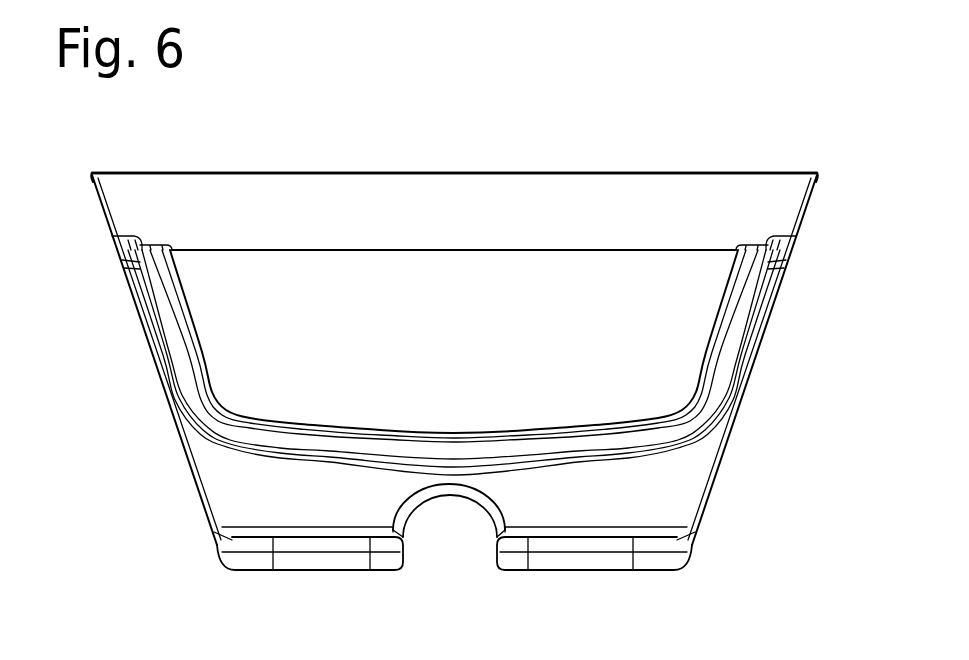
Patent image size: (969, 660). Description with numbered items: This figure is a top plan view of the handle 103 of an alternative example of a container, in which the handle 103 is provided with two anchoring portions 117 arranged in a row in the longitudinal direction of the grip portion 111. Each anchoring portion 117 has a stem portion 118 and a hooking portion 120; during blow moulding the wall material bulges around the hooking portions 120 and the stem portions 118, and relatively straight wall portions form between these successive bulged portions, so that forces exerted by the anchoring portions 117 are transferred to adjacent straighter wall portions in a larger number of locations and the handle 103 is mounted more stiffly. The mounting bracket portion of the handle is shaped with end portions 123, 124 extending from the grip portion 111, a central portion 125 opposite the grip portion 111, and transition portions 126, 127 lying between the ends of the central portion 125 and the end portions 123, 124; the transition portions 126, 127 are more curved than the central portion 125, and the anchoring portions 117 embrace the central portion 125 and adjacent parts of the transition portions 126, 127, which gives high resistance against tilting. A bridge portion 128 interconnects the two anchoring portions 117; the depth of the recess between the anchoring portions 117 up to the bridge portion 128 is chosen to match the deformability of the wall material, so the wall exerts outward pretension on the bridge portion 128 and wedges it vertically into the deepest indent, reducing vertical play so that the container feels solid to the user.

The handle 103 is at (688, 143).
The grip portion 111 is at (481, 168).
The anchoring portions 117 is at (255, 490).
The stem portions 118 is at (355, 498).
The hooking portions 120 is at (333, 553).
The end portion 123 is at (128, 262).
The end portion 124 is at (780, 262).
The central portion 125 is at (457, 448).
The transition portion 126 is at (222, 423).
The transition portion 127 is at (688, 422).
The bridge portion 128 is at (452, 492).